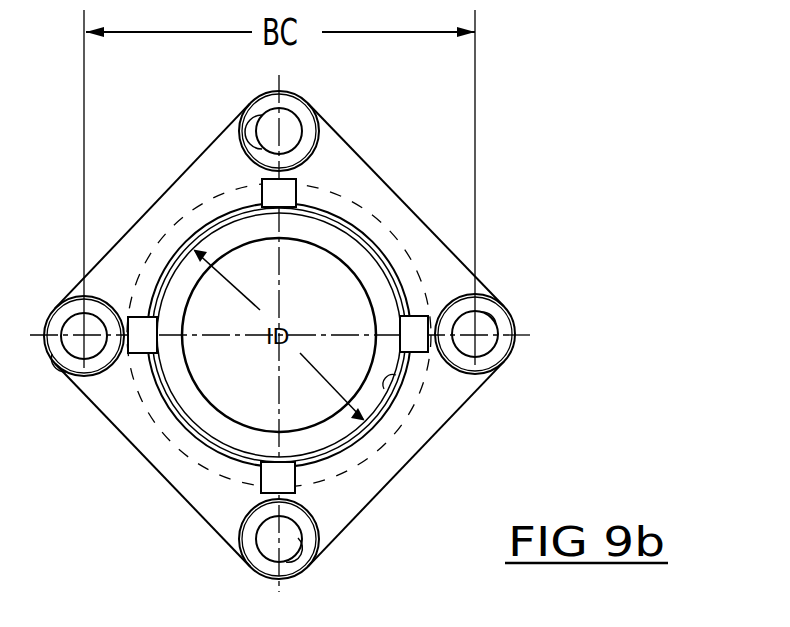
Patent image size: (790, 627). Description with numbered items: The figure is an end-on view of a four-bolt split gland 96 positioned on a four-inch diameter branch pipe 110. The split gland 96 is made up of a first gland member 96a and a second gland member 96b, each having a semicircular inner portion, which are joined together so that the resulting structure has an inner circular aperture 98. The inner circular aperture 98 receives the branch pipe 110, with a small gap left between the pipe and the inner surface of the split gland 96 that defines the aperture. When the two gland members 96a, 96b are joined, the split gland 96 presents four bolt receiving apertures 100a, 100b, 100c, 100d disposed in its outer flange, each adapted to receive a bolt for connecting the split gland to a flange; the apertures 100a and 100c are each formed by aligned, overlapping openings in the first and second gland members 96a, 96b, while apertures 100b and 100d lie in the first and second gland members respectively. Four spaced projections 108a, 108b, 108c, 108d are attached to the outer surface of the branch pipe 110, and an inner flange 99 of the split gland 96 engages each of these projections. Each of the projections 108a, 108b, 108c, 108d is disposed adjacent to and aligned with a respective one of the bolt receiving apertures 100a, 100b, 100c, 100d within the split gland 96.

The split gland 96 is at (415, 190).
The first gland member 96a is at (217, 167).
The second gland member 96b is at (427, 247).
The inner circular aperture 98 is at (407, 373).
The inner flange 99 is at (207, 450).
The circular aperture 100a is at (262, 124).
The circular aperture 100b is at (66, 374).
The circular aperture 100c is at (290, 539).
The circular aperture 100d is at (490, 312).
The spaced projection 108a is at (292, 187).
The spaced projection 108b is at (139, 315).
The spaced projection 108c is at (263, 483).
The spaced projection 108d is at (413, 320).
The branch pipe 110 is at (318, 437).